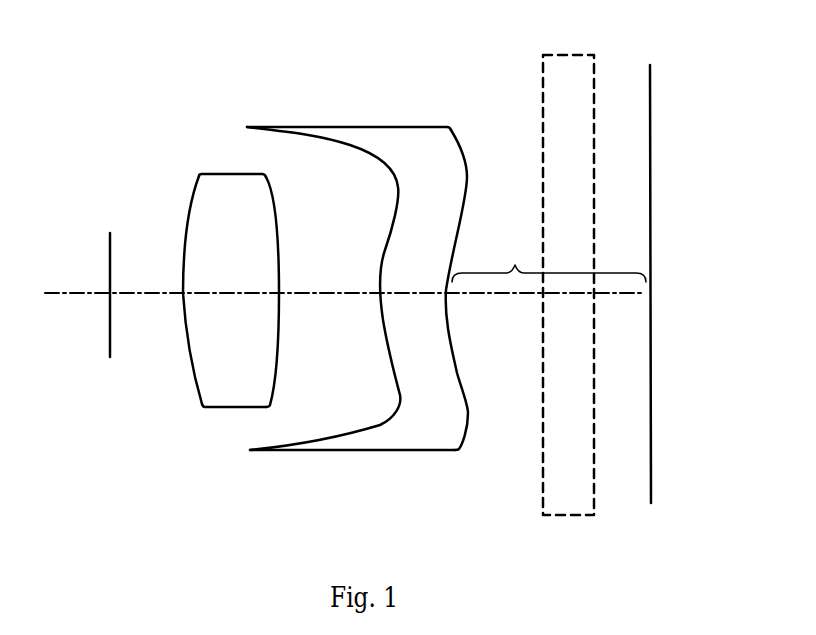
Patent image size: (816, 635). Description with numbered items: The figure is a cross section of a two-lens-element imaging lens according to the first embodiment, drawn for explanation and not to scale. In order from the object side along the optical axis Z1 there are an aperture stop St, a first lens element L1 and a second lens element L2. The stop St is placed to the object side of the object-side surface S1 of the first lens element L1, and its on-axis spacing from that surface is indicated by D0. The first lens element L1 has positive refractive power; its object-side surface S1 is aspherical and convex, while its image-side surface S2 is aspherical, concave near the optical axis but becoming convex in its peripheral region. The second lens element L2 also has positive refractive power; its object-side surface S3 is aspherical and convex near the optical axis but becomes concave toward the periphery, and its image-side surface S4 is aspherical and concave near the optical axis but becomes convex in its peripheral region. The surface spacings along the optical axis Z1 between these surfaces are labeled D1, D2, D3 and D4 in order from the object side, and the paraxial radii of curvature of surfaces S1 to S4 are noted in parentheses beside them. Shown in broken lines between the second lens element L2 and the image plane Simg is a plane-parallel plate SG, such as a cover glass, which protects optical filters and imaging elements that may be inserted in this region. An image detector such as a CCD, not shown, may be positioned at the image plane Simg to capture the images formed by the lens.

The optical axis Z1 is at (54, 294).
The aperture stop St is at (110, 260).
The first lens element L1 is at (236, 271).
The second lens element L2 is at (362, 286).
The object-side surface of first lens element S1 is at (195, 380).
The image-side surface of first lens element S2 is at (279, 355).
The object-side surface of second lens element S3 is at (337, 432).
The image-side surface of second lens element S4 is at (468, 423).
The on-axis surface spacing of stop D0 is at (145, 274).
The surface spacing D1 is at (232, 274).
The surface spacing D2 is at (327, 276).
The surface spacing D3 is at (415, 276).
The surface spacing D4 is at (549, 258).
The plane-parallel plate SG is at (566, 68).
The image plane Simg is at (651, 95).